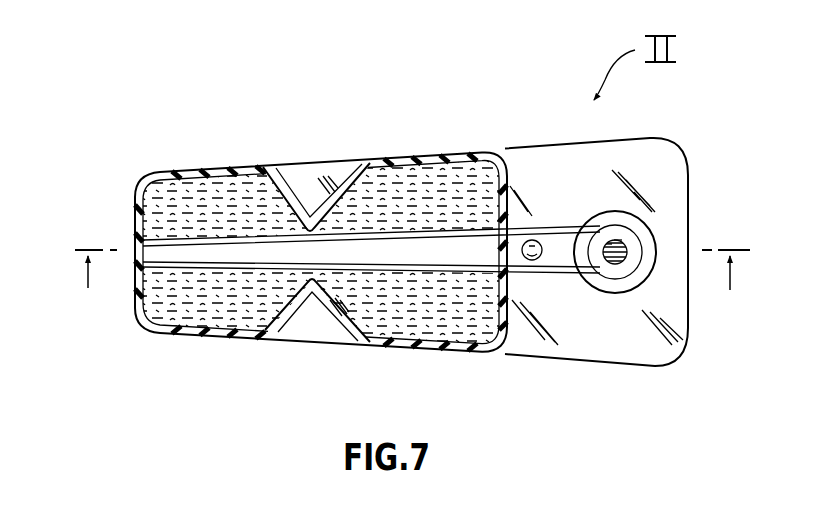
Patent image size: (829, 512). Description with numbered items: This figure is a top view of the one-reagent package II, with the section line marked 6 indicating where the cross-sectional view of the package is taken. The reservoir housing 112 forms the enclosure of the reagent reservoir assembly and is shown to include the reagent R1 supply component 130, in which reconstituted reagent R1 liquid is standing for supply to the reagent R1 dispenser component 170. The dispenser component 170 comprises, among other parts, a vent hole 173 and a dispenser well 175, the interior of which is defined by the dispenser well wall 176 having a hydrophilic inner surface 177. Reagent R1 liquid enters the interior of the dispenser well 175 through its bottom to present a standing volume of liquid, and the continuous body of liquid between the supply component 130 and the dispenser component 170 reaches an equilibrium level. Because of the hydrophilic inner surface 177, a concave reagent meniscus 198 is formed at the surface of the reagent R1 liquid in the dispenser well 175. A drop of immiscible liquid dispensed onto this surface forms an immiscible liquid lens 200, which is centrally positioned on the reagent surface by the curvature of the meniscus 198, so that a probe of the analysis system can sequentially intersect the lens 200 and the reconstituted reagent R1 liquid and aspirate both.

The reservoir housing 112 is at (133, 183).
The reagent R1 supply component 130 is at (257, 153).
The reagent R1 is at (226, 338).
The vent hole 173 is at (532, 262).
The reagent R1 dispenser component 170 is at (680, 132).
The dispenser well 175 is at (664, 246).
The dispenser well wall 176 is at (638, 274).
The hydrophilic inner surface 177 is at (618, 272).
The concave reagent meniscus 198 is at (618, 238).
The immiscible liquid lens 200 is at (610, 240).
The section line 6 is at (412, 287).